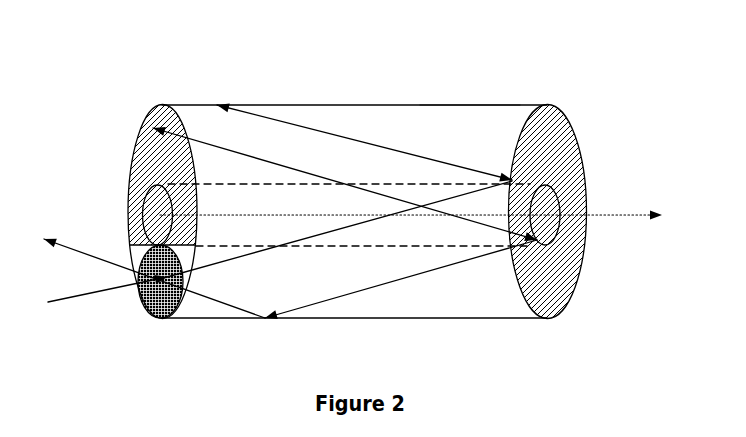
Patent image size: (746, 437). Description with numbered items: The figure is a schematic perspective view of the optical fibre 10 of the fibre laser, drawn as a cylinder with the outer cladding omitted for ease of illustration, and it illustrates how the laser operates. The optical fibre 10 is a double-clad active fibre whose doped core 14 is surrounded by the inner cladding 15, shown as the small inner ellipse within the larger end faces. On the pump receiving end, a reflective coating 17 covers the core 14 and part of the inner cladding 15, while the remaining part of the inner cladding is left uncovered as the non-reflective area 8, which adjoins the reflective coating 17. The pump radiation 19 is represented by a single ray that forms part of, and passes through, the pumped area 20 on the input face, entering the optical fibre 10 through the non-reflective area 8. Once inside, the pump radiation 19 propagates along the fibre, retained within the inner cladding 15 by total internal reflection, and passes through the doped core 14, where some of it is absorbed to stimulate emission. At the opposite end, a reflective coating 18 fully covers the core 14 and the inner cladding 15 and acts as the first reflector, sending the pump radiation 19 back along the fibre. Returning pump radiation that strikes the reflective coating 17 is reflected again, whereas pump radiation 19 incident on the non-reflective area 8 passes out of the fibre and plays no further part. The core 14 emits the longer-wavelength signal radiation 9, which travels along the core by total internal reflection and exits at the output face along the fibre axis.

The non-reflective area 8 is at (130, 256).
The signal radiation 9 is at (420, 215).
The optical fibre 10 is at (382, 127).
The doped core 14 is at (413, 193).
The inner cladding 15 is at (482, 137).
The reflective coating 17 is at (147, 152).
The reflective coating 18 is at (553, 152).
The pump radiation 19 is at (92, 293).
The pumped area 20 is at (158, 291).